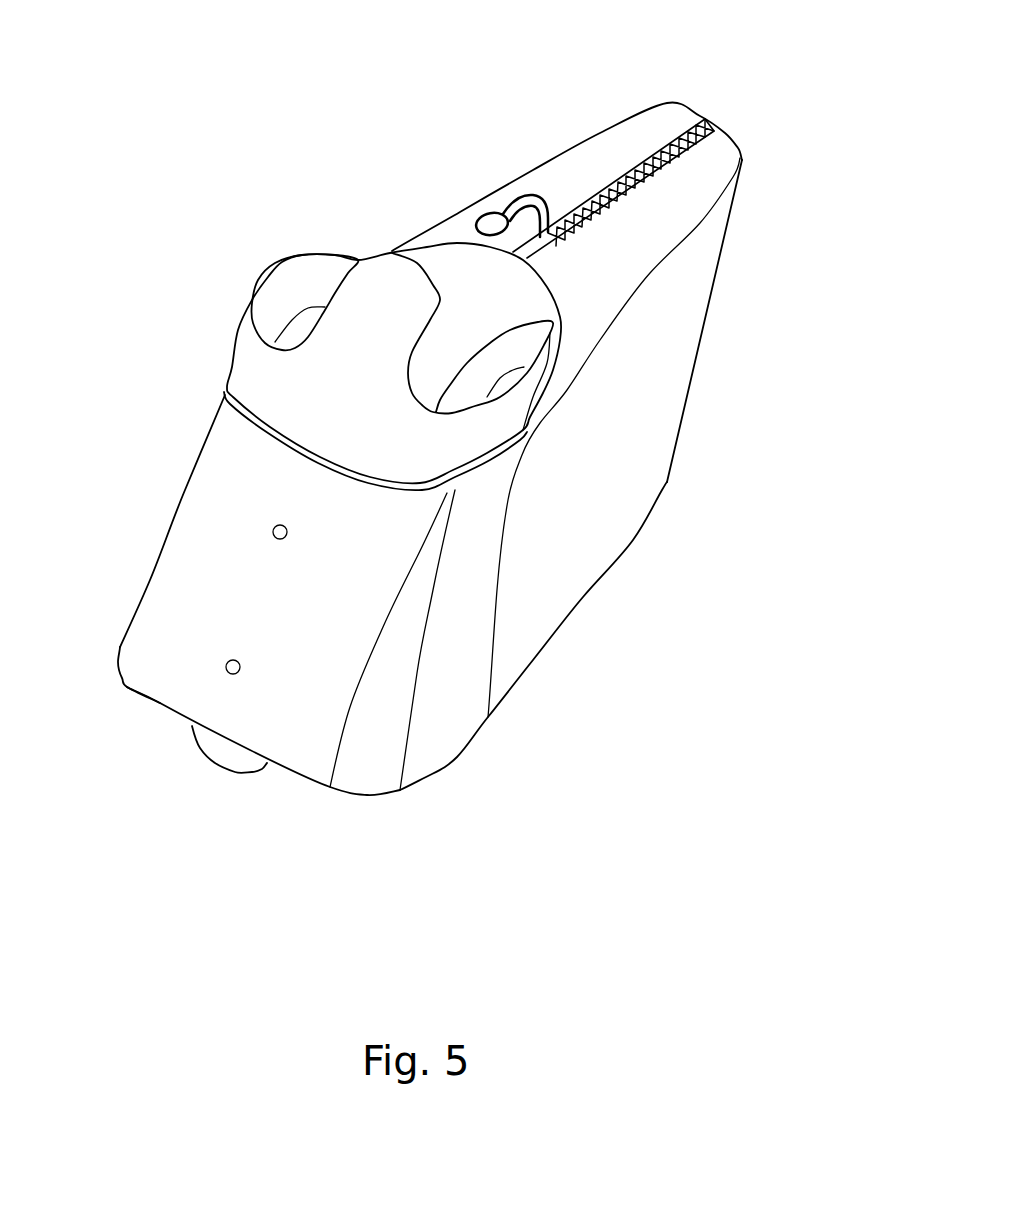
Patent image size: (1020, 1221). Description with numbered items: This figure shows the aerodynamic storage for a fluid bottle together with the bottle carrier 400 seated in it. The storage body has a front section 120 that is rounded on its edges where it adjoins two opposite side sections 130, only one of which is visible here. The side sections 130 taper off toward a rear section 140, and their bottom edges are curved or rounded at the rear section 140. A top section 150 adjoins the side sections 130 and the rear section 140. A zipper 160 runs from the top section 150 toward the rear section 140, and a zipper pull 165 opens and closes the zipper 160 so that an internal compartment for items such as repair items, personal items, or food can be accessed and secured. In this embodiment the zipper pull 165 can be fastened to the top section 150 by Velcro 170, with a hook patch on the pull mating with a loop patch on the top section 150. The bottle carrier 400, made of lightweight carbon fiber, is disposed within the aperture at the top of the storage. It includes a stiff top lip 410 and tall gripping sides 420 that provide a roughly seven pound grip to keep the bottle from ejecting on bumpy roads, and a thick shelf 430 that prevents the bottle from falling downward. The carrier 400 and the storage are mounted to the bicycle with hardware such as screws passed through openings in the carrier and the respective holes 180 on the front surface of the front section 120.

The front section 120 is at (173, 680).
The side sections 130 is at (590, 537).
The rear section 140 is at (714, 364).
The top section 150 is at (620, 137).
The zipper 160 is at (685, 127).
The zipper pull 165 is at (520, 195).
The Velcro 170 is at (482, 217).
The holes 180 is at (229, 661).
The bottle carrier 400 is at (367, 405).
The stiff top lip 410 is at (373, 303).
The tall gripping sides 420 is at (235, 353).
The thick shelf 430 is at (227, 753).